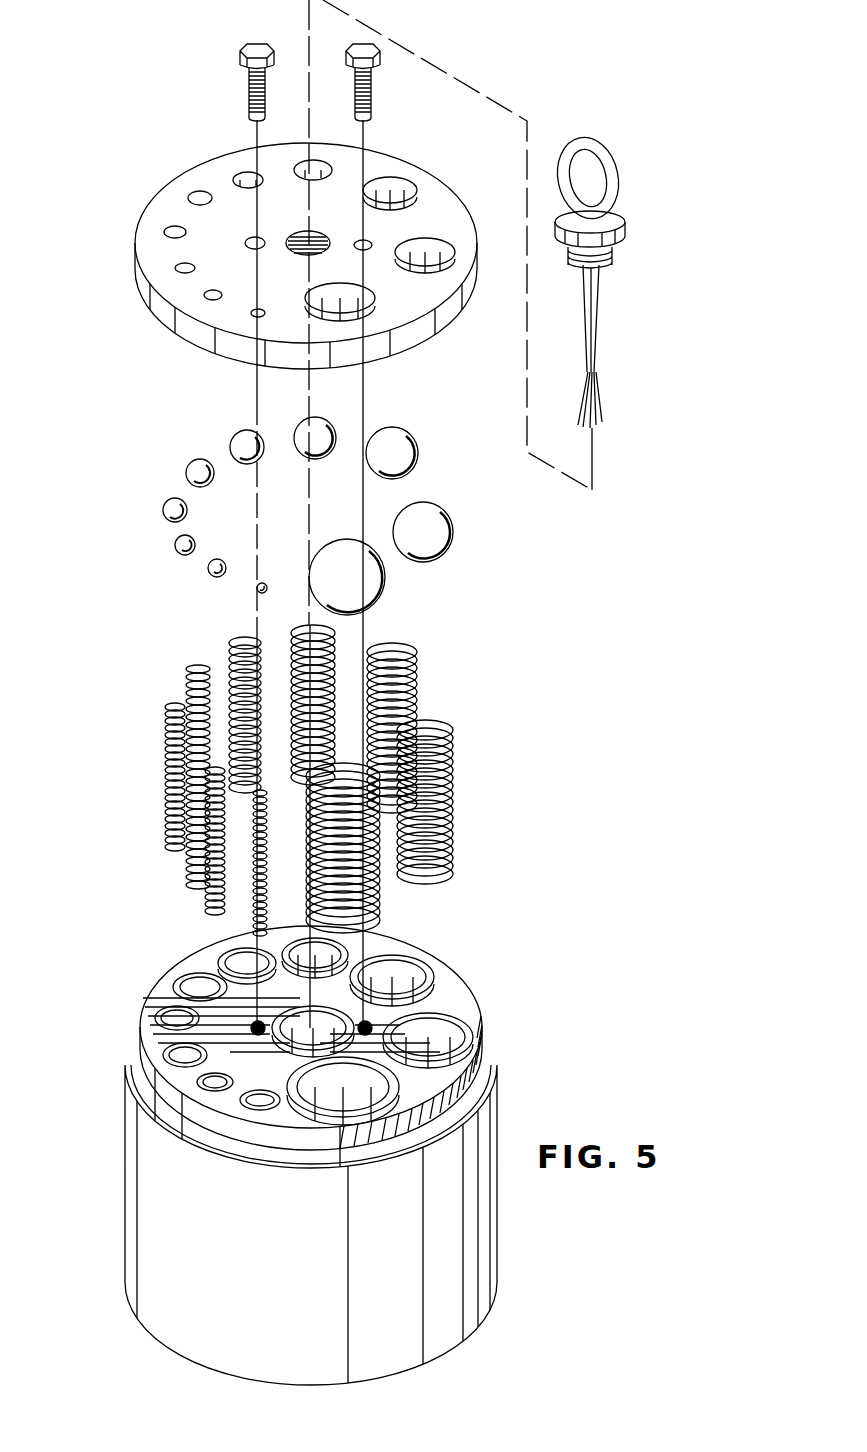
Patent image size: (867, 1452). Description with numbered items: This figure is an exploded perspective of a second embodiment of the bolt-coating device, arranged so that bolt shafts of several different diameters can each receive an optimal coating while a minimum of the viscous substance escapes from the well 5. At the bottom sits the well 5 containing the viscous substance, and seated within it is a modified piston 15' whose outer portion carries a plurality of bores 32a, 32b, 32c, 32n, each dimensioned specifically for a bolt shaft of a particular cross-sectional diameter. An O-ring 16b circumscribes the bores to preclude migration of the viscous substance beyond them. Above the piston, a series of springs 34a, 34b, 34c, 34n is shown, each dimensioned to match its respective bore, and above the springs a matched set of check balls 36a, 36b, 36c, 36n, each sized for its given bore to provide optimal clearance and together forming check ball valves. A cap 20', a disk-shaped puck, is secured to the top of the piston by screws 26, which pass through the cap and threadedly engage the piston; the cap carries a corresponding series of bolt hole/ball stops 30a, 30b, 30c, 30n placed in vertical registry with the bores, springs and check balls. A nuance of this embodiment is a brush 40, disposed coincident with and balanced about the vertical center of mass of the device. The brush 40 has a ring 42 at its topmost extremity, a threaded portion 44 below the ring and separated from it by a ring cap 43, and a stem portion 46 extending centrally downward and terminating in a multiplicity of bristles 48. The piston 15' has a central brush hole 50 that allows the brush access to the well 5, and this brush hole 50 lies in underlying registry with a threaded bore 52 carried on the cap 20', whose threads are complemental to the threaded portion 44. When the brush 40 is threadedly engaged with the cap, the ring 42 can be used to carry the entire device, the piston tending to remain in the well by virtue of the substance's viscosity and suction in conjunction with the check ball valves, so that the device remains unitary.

The well 5 is at (472, 1242).
The piston 15' is at (467, 1076).
The O-ring 16b is at (300, 935).
The cap 20' is at (253, 256).
The screws 26 is at (253, 46).
The bolt hole/ball stop 30a is at (362, 283).
The bolt hole/ball stop 30b is at (430, 252).
The bolt hole/ball stop 30c is at (404, 193).
The bolt hole/ball stop 30n is at (252, 312).
The bore 32a is at (400, 1095).
The bore 32b is at (470, 1025).
The bore 32c is at (352, 950).
The bore 32n is at (250, 1101).
The spring 34a is at (380, 905).
The spring 34b is at (453, 832).
The spring 34c is at (418, 663).
The spring 34n is at (254, 930).
The check ball 36a is at (378, 590).
The check ball 36b is at (445, 528).
The check ball 36c is at (398, 442).
The check ball 36n is at (256, 589).
The brush 40 is at (623, 204).
The ring 42 is at (586, 142).
The ring cap 43 is at (622, 237).
The threaded portion 44 is at (612, 262).
The stem portion 46 is at (598, 333).
The bristles 48 is at (600, 401).
The brush hole 50 is at (493, 1080).
The threaded bore 52 is at (303, 232).